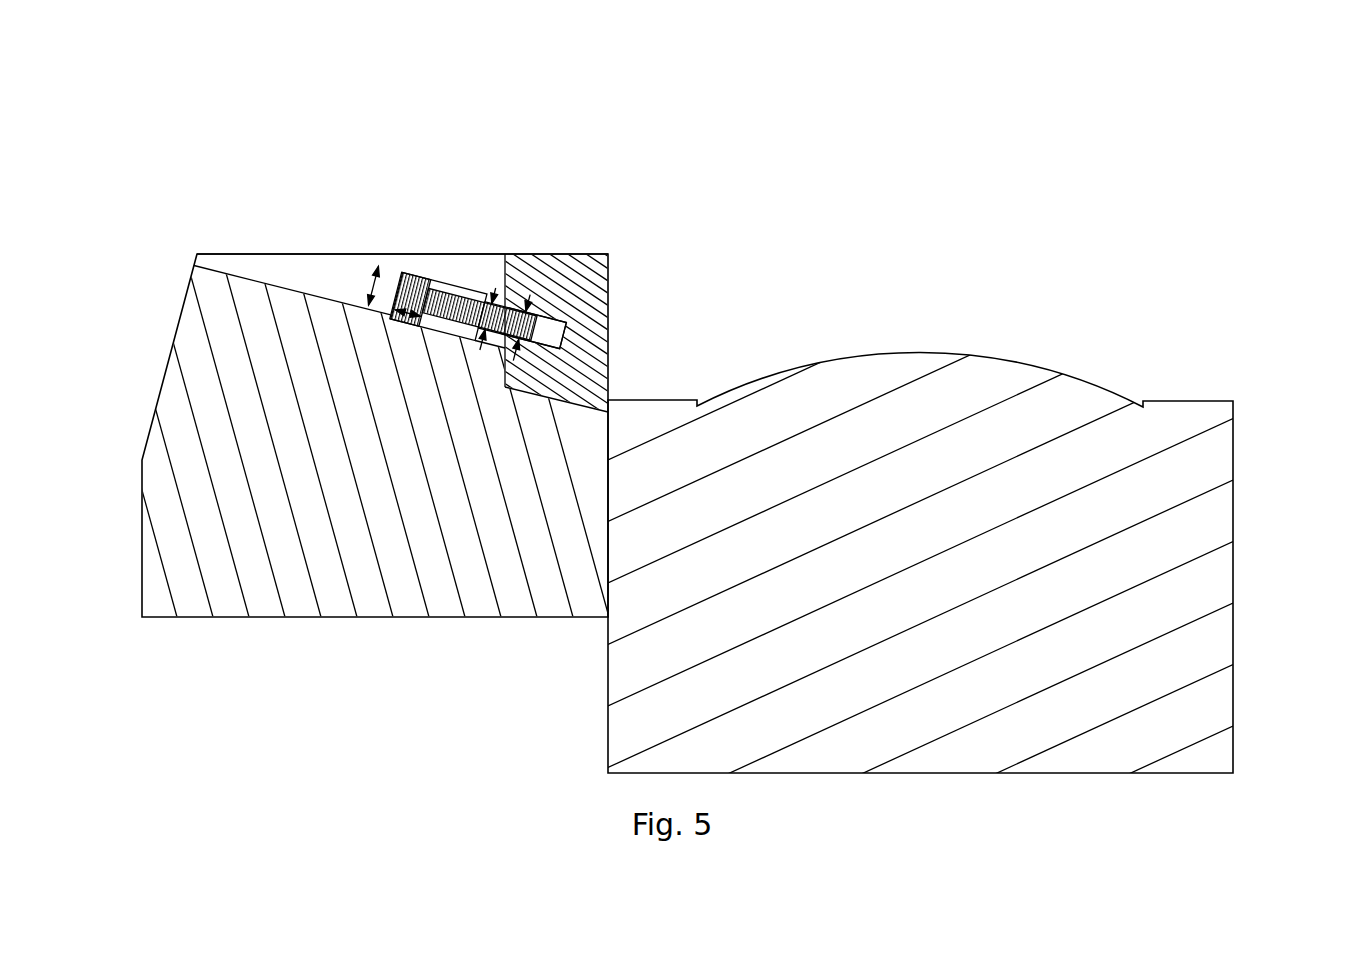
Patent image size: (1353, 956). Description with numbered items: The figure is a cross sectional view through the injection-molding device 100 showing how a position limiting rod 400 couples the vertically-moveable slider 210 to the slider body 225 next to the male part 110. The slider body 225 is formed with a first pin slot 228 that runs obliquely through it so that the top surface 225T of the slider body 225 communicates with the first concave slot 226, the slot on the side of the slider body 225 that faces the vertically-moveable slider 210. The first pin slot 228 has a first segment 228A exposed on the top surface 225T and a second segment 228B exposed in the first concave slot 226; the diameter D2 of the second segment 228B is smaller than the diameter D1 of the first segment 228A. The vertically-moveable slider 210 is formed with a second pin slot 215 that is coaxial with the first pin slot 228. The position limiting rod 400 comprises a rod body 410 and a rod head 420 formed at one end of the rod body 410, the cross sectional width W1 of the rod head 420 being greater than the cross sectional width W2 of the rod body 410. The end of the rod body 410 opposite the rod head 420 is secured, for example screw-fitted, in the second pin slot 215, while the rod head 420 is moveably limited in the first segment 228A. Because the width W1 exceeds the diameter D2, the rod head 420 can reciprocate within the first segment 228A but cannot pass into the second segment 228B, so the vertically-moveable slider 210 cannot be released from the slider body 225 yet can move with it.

The injection-molding device 100 is at (146, 89).
The male part 110 is at (1166, 588).
The vertically-moveable slider 210 is at (573, 295).
The second pin slot 215 is at (560, 330).
The slider body 225 is at (184, 578).
The top surface 225T is at (595, 254).
The first concave slot 226 is at (568, 412).
The first pin slot 228 is at (478, 232).
The first segment 228A is at (453, 286).
The second segment 228B is at (486, 300).
The position limiting rod 400 is at (446, 504).
The rod body 410 is at (484, 324).
The rod head 420 is at (394, 322).
The diameter of the first segment D1 is at (378, 266).
The diameter of the second segment D2 is at (496, 288).
The cross sectional width of the rod head W1 is at (404, 307).
The cross sectional width of the rod body W2 is at (530, 295).